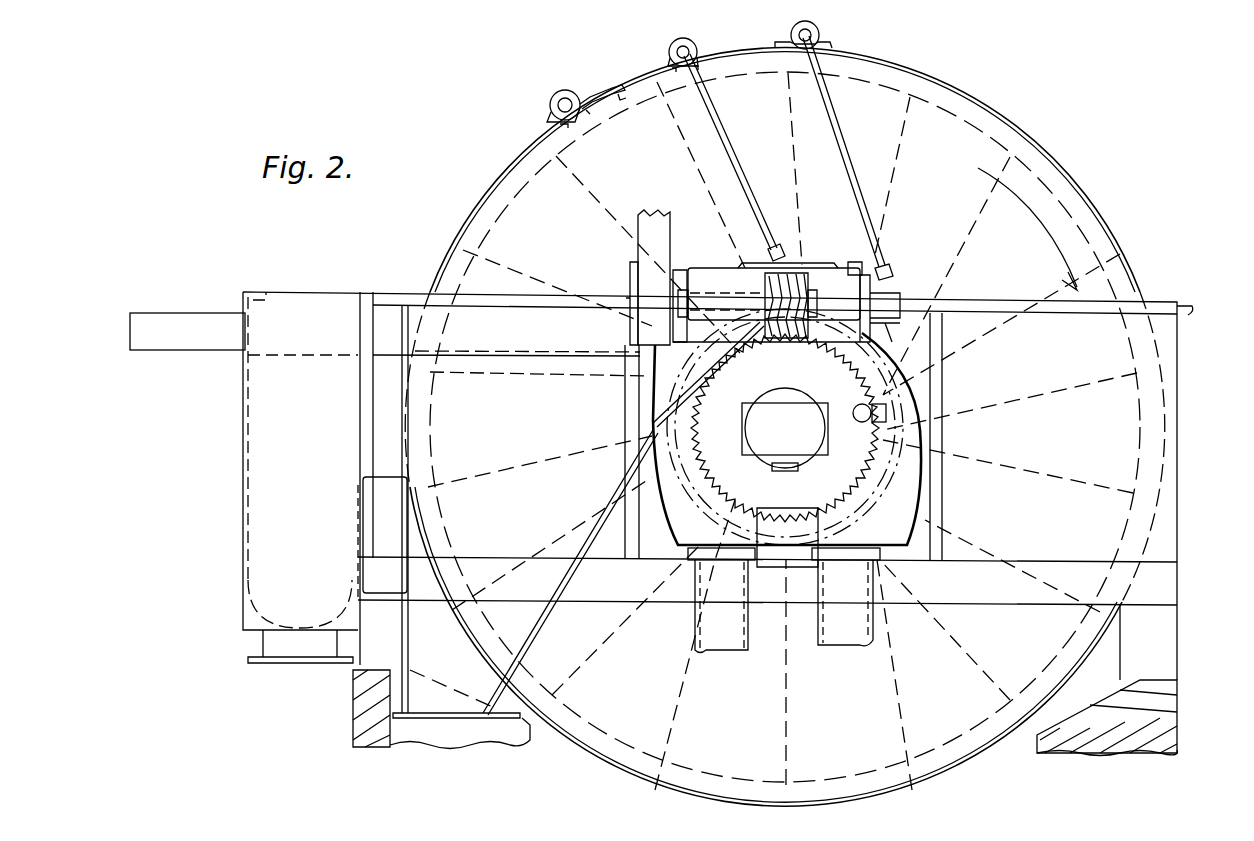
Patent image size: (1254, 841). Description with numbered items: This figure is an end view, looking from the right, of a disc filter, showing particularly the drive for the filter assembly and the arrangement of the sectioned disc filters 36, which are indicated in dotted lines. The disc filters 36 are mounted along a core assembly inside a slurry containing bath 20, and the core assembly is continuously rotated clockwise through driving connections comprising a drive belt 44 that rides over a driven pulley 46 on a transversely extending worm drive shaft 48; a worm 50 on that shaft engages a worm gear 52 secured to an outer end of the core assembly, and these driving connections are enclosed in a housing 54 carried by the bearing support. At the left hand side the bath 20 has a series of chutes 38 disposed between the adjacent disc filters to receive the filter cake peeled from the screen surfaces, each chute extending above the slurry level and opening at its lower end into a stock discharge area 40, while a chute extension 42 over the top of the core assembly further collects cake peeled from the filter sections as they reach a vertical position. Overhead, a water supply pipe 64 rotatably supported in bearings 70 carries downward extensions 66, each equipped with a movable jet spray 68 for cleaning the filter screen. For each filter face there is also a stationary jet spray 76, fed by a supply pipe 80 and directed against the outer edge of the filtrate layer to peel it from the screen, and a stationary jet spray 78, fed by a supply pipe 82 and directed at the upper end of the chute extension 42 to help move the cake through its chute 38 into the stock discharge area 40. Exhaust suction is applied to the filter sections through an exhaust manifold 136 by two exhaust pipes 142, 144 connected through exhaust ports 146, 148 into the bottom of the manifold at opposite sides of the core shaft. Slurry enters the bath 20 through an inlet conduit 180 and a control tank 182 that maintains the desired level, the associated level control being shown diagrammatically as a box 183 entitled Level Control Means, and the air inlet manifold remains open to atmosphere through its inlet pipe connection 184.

The slurry containing bath 20 is at (407, 283).
The sectioned disc filters 36 is at (1058, 153).
The chutes 38 is at (538, 620).
The stock discharge area 40 is at (474, 712).
The chute extension 42 is at (800, 264).
The drive belt 44 is at (666, 212).
The driven pulley 46 is at (630, 276).
The worm drive shaft 48 is at (856, 266).
The worm 50 is at (764, 268).
The worm gear 52 is at (838, 383).
The housing 54 is at (915, 515).
The water supply pipe 64 is at (822, 35).
The downward extensions 66 is at (852, 155).
The jet spray 68 is at (893, 268).
The bearings 70 is at (790, 33).
The stationary jet spray 76 is at (604, 90).
The stationary jet spray 78 is at (745, 174).
The supply pipe 80 is at (558, 95).
The supply pipe 82 is at (670, 50).
The exhaust manifold 136 is at (913, 387).
The exhaust pipe 142 is at (692, 630).
The exhaust pipe 144 is at (870, 630).
The exhaust port 146 is at (688, 572).
The exhaust port 148 is at (880, 568).
The inlet conduit 180 is at (262, 648).
The control tank 182 is at (243, 385).
The box entitled Level Control Means 183 is at (188, 300).
The inlet pipe connection 184 is at (870, 425).